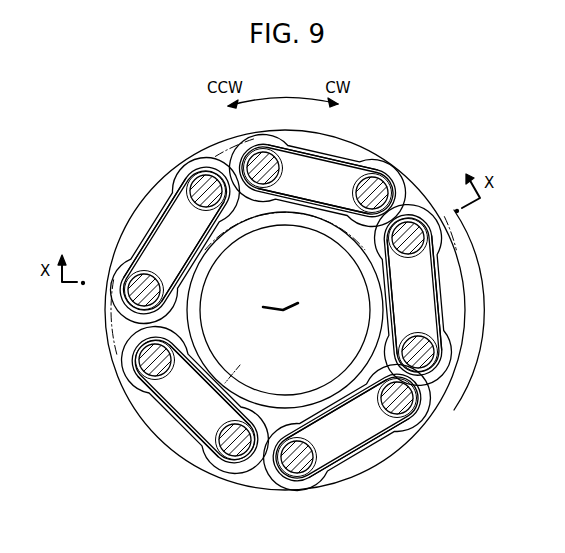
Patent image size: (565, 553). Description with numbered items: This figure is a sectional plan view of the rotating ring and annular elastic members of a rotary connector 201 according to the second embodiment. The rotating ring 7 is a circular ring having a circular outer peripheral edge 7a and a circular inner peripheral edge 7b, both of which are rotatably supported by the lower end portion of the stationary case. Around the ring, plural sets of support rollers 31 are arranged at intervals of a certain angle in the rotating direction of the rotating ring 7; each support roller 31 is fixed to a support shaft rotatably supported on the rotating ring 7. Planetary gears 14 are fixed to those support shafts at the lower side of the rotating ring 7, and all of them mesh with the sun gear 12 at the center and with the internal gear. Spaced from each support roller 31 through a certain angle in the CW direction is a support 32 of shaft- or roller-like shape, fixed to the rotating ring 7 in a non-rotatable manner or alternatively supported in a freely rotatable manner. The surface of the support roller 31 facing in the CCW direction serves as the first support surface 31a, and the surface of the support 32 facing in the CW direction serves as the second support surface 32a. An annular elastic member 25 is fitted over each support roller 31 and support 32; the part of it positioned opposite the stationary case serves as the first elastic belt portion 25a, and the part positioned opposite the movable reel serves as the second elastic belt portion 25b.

The rotating ring 7 is at (114, 372).
The outer peripheral edge 7a is at (464, 332).
The inner peripheral edge 7b is at (369, 304).
The sun gear 12 is at (241, 366).
The planetary gears 14 is at (290, 146).
The annular elastic member 25 is at (387, 161).
The first elastic belt portion 25a is at (367, 158).
The second elastic belt portion 25b is at (337, 212).
The support roller 31 is at (262, 166).
The first support surface 31a is at (253, 228).
The support 32 is at (203, 188).
The second support surface 32a is at (228, 176).
The rotary connector 201 is at (460, 148).